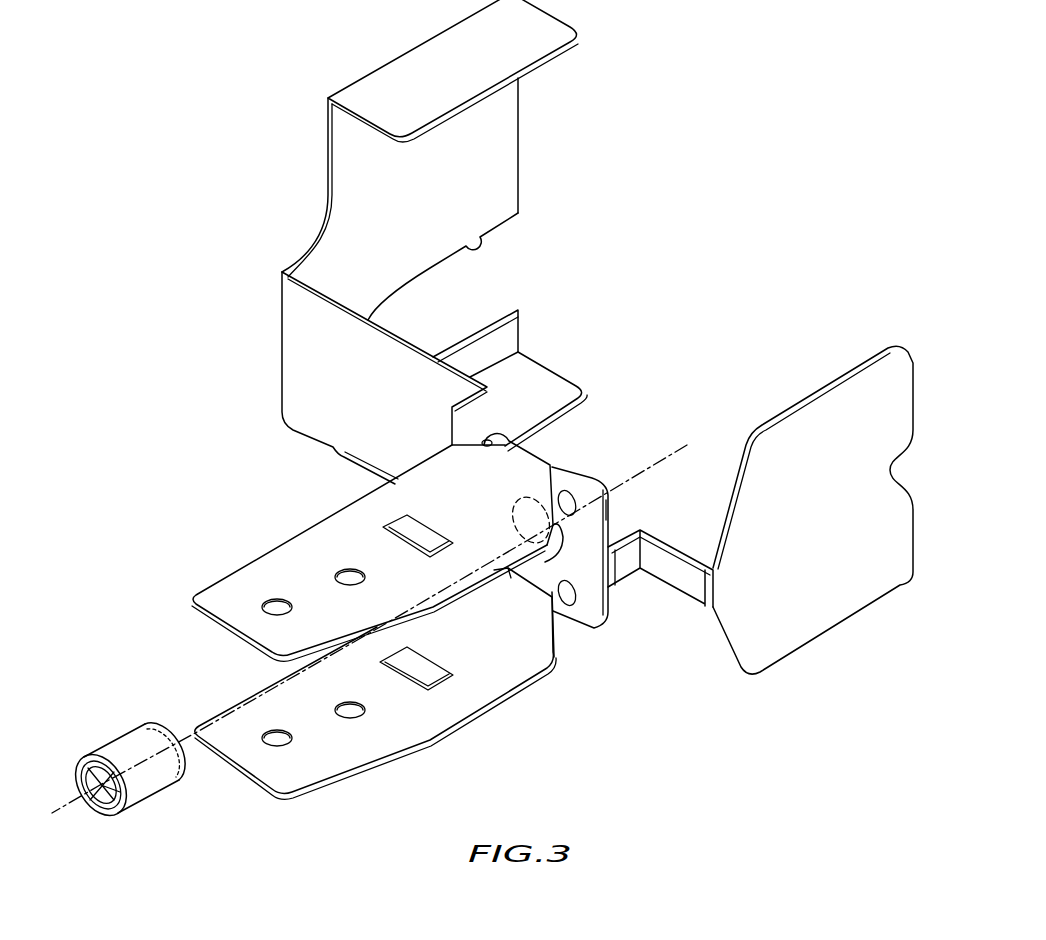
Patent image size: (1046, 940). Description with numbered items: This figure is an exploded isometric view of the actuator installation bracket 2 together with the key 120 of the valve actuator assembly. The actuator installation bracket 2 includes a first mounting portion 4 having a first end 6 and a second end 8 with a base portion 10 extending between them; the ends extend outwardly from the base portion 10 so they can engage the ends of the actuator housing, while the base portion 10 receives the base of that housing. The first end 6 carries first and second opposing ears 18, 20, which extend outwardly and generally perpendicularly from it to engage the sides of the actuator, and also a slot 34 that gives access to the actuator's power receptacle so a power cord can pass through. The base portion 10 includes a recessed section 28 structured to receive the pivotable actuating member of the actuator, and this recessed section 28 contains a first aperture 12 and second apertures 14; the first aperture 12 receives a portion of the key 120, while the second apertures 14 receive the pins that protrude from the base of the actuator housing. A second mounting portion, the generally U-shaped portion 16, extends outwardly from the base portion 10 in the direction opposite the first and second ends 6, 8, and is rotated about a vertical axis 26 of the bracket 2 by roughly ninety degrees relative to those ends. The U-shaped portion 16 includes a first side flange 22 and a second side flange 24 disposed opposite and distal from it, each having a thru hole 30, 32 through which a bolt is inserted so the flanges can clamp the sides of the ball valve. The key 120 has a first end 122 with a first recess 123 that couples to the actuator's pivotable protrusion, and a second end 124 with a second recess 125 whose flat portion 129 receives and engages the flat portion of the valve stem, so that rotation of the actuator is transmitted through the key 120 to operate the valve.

The actuator installation bracket 2 is at (691, 712).
The first mounting portion 4 is at (592, 100).
The first end 6 is at (398, 189).
The second end 8 is at (815, 552).
The base portion 10 is at (292, 327).
The first aperture 12 is at (555, 550).
The second apertures 14 is at (487, 440).
The second mounting portion (generally U-shaped portion) 16 is at (560, 700).
The first ear 18 is at (533, 377).
The second ear 20 is at (418, 60).
The first side flange 22 is at (488, 662).
The second side flange 24 is at (388, 589).
The vertical axis 26 is at (683, 445).
The recessed section 28 is at (610, 510).
The thru hole 30 is at (366, 709).
The thru hole 32 is at (353, 570).
The slot 34 is at (482, 235).
The key 120 is at (142, 783).
The first end 122 is at (182, 768).
The first recess 123 is at (166, 710).
The second end 124 is at (117, 815).
The second recess 125 is at (84, 756).
The flat portion 129 is at (93, 817).